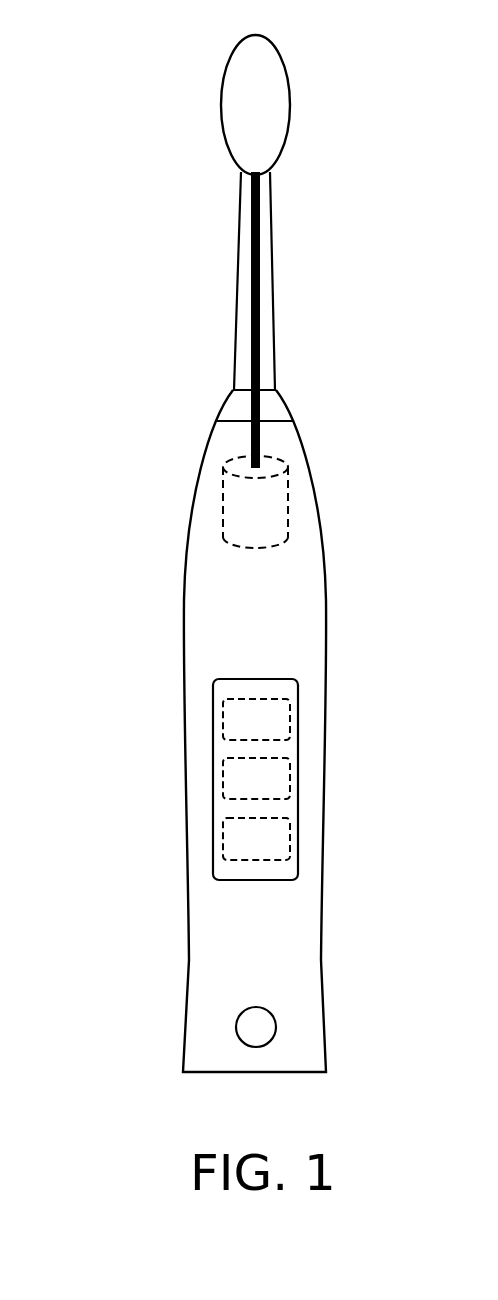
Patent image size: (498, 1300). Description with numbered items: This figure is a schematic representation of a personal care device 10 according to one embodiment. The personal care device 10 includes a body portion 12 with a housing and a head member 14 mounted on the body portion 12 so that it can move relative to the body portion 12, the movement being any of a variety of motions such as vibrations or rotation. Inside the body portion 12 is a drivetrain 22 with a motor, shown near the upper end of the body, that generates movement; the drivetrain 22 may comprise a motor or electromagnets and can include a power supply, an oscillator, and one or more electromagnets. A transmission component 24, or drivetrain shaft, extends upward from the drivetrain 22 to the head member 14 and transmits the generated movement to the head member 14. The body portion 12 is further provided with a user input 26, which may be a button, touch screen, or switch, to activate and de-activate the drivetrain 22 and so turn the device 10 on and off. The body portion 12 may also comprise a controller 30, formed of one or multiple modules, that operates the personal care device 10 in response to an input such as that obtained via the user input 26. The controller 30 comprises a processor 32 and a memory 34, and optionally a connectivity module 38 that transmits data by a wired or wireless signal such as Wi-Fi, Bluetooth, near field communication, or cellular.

The personal care device 10 is at (102, 92).
The body portion 12 is at (179, 600).
The head member 14 is at (206, 143).
The drivetrain 22 is at (276, 508).
The transmission component 24 is at (254, 332).
The user input 26 is at (242, 1027).
The controller 30 is at (220, 749).
The processor 32 is at (282, 718).
The memory 34 is at (282, 777).
The connectivity module 38 is at (282, 839).